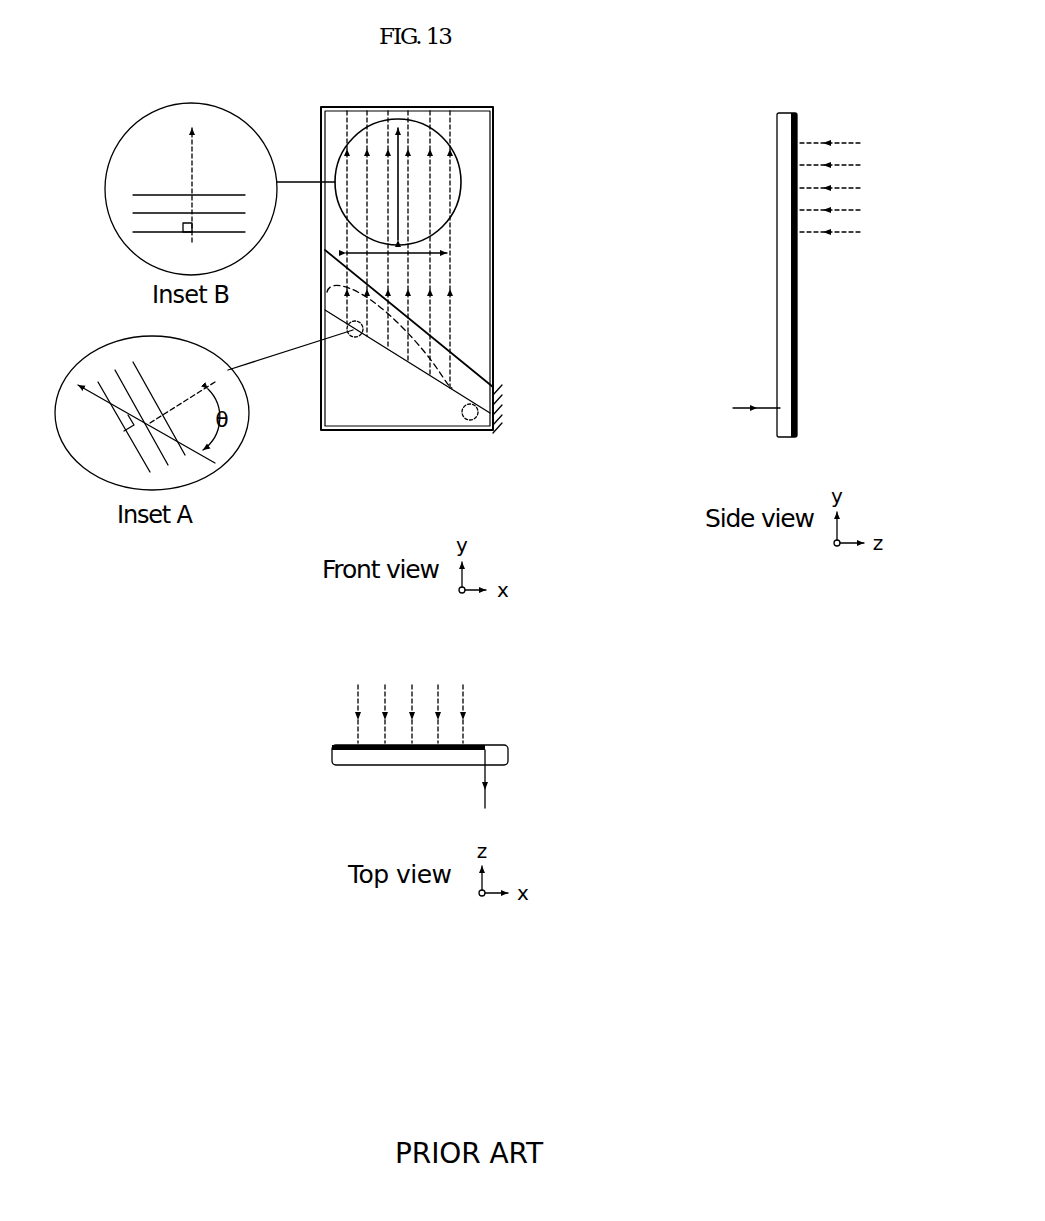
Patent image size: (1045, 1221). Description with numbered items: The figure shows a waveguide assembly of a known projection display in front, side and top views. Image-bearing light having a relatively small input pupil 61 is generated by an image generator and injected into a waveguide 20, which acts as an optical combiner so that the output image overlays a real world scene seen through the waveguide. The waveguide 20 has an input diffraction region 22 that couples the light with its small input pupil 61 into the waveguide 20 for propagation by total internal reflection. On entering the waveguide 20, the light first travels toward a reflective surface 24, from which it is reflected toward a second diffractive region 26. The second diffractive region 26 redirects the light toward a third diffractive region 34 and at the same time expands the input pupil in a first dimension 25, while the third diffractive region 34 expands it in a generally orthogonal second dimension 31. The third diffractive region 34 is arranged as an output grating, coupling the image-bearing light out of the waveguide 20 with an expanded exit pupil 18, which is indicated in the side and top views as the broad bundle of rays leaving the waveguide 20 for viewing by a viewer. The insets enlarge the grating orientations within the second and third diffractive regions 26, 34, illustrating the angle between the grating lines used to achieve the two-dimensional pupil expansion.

The expanded exit pupil 18 is at (866, 140).
The waveguide 20 is at (348, 405).
The input diffraction region 22 is at (480, 420).
The reflective surface 24 is at (500, 402).
The first dimension 25 is at (437, 255).
The second diffractive region 26 is at (478, 376).
The second dimension 31 is at (398, 147).
The third diffractive region 34 is at (461, 177).
The input pupil 61 is at (733, 408).